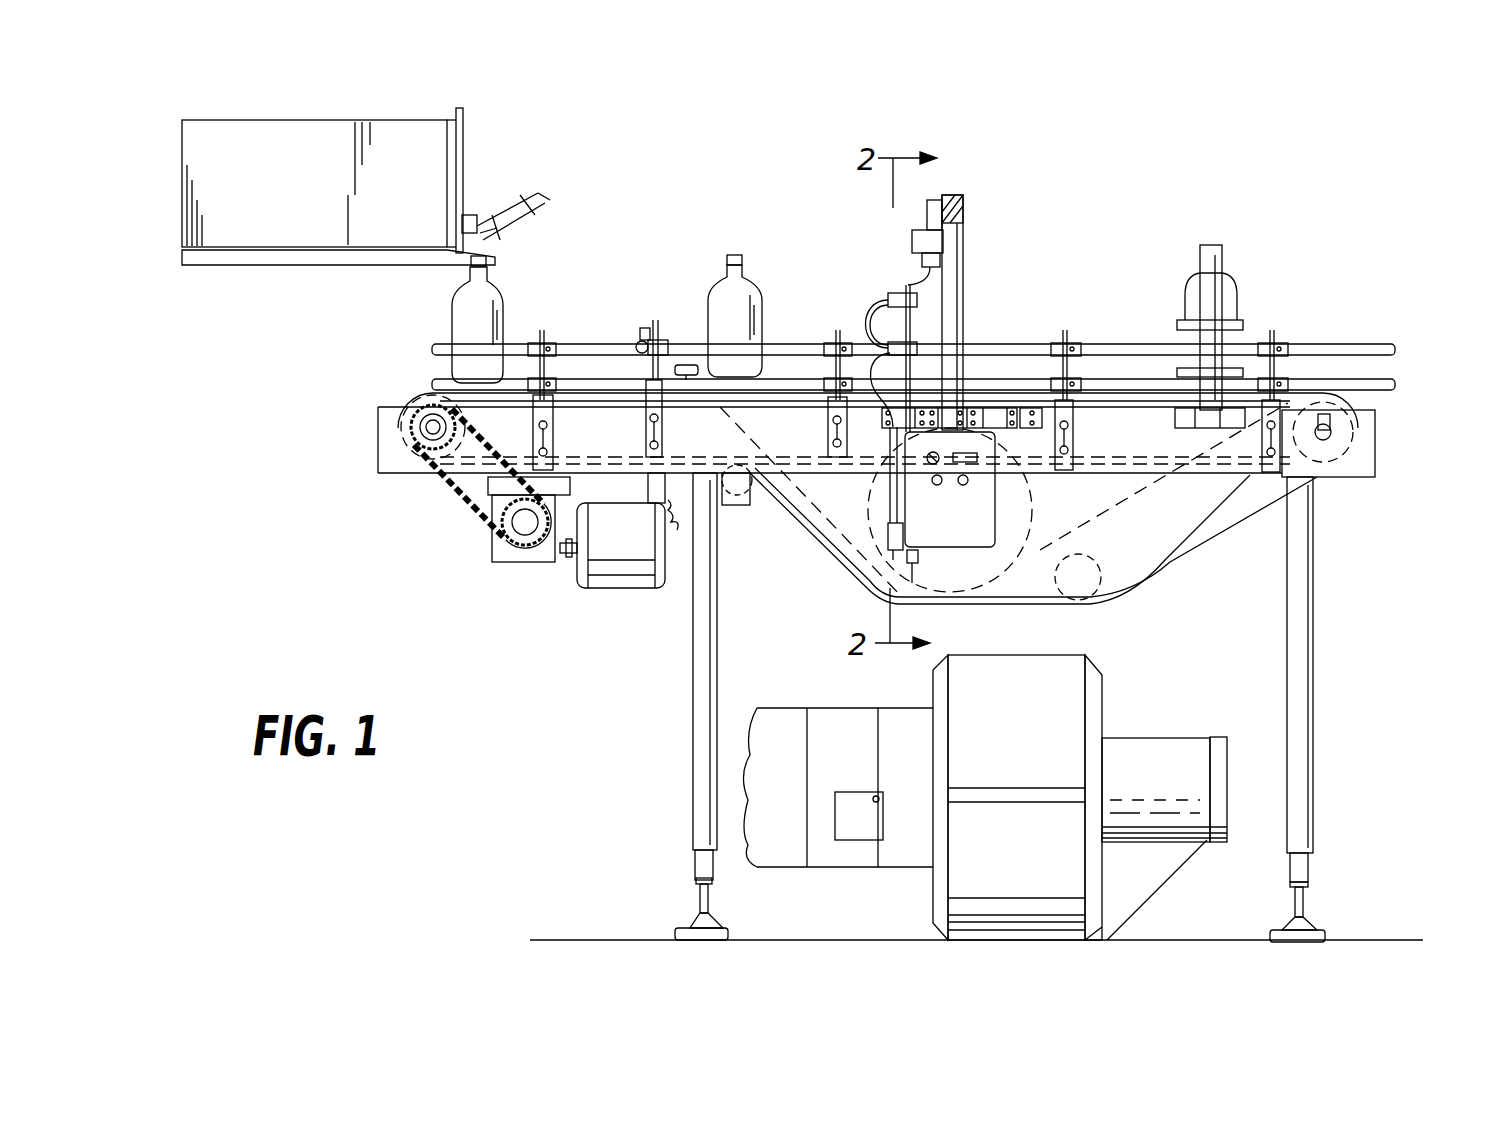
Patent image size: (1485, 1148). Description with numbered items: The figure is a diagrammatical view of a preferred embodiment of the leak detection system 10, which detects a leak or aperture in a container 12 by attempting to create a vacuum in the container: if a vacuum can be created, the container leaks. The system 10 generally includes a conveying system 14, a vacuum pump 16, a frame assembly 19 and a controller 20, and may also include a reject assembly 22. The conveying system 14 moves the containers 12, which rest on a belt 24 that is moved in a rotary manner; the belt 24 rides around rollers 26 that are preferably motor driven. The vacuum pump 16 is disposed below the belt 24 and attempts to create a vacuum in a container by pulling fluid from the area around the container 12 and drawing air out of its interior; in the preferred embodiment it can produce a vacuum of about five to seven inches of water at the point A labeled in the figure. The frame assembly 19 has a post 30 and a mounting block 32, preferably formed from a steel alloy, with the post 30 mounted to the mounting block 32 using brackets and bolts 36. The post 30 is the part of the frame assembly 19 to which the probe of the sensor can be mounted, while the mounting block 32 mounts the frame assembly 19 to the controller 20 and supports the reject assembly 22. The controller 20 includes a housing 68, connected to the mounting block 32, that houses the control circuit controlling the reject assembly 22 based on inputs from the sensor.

The leak detection system 10 is at (682, 173).
The container 12 is at (500, 290).
The conveying system 14 is at (1340, 527).
The vacuum pump 16 is at (1065, 714).
The frame assembly 19 is at (978, 288).
The controller 20 is at (966, 530).
The reject assembly 22 is at (864, 292).
The belt 24 is at (418, 395).
The rollers 26 is at (393, 442).
The post 30 is at (958, 223).
The mounting block 32 is at (1040, 421).
The bolts 36 is at (975, 410).
The housing 68 is at (997, 520).
The point A is at (917, 520).